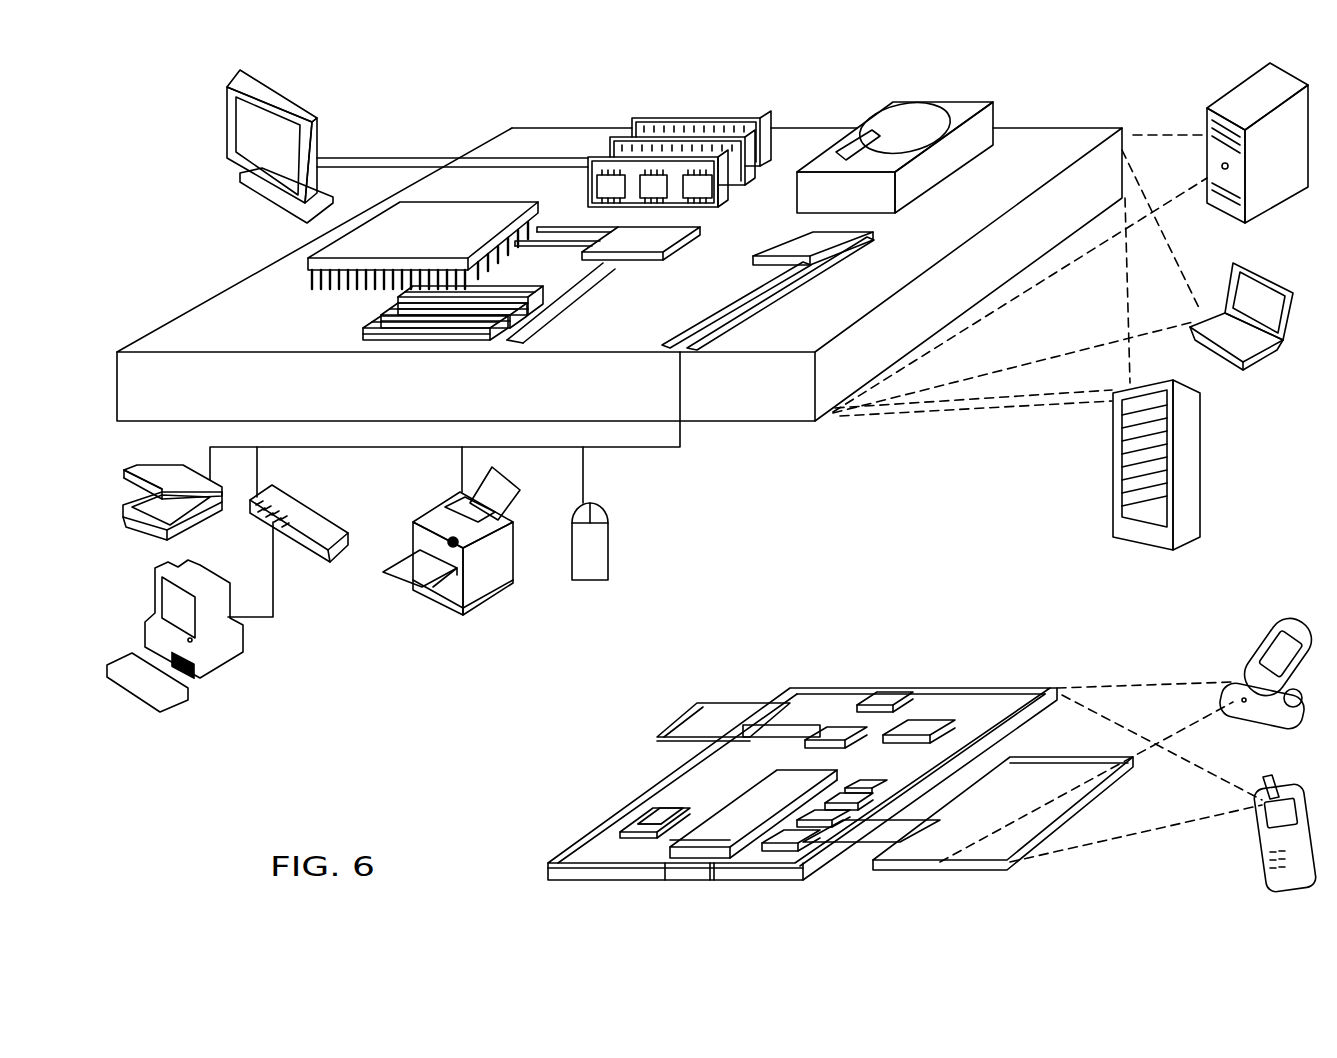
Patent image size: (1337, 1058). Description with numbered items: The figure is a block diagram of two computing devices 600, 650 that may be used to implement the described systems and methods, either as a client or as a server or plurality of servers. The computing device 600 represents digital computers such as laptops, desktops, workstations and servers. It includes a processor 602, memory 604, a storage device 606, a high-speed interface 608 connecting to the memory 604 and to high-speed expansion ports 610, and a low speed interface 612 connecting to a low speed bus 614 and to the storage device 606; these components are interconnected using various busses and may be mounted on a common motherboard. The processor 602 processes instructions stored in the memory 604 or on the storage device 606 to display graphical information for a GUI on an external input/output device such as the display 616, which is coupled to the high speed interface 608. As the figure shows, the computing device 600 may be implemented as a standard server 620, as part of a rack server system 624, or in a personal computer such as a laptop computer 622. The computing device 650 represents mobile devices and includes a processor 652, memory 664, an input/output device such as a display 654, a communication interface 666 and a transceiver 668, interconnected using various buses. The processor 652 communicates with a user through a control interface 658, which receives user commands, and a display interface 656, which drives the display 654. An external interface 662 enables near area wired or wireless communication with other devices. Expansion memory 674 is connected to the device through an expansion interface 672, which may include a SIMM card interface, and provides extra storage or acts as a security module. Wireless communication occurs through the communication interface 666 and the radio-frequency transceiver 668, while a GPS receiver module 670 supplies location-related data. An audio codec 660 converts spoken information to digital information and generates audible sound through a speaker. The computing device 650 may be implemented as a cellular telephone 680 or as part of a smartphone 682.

The computing device 600 is at (436, 88).
The processor 602 is at (272, 268).
The memory 604 is at (647, 115).
The storage device 606 is at (879, 102).
The high-speed interface 608 is at (607, 237).
The high-speed expansion ports 610 is at (378, 314).
The low speed interface 612 is at (813, 247).
The low speed bus 614 is at (703, 355).
The display 616 is at (236, 88).
The standard server 620 is at (1208, 112).
The laptop computer 622 is at (1236, 262).
The rack server system 624 is at (1113, 492).
The computing device 650 is at (768, 655).
The processor 652 is at (718, 873).
The display 654 is at (1000, 875).
The display interface 656 is at (815, 890).
The control interface 658 is at (850, 860).
The audio codec 660 is at (898, 845).
The external interface 662 is at (705, 870).
The memory 664 is at (628, 822).
The communication interface 666 is at (852, 733).
The transceiver 668 is at (932, 727).
The GPS receiver module 670 is at (885, 720).
The expansion interface 672 is at (770, 704).
The expansion memory 674 is at (692, 705).
The cellular telephone 680 is at (1282, 633).
The smartphone 682 is at (1263, 775).